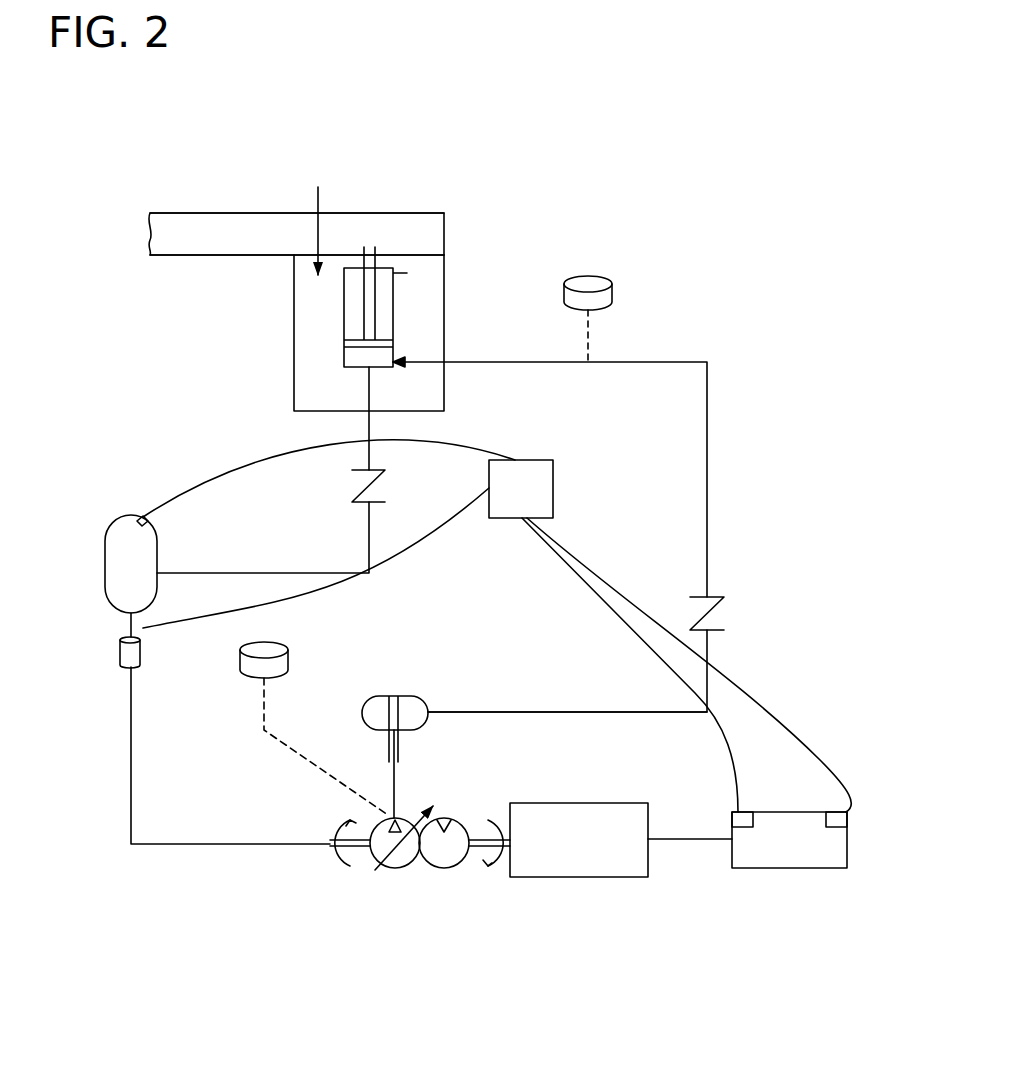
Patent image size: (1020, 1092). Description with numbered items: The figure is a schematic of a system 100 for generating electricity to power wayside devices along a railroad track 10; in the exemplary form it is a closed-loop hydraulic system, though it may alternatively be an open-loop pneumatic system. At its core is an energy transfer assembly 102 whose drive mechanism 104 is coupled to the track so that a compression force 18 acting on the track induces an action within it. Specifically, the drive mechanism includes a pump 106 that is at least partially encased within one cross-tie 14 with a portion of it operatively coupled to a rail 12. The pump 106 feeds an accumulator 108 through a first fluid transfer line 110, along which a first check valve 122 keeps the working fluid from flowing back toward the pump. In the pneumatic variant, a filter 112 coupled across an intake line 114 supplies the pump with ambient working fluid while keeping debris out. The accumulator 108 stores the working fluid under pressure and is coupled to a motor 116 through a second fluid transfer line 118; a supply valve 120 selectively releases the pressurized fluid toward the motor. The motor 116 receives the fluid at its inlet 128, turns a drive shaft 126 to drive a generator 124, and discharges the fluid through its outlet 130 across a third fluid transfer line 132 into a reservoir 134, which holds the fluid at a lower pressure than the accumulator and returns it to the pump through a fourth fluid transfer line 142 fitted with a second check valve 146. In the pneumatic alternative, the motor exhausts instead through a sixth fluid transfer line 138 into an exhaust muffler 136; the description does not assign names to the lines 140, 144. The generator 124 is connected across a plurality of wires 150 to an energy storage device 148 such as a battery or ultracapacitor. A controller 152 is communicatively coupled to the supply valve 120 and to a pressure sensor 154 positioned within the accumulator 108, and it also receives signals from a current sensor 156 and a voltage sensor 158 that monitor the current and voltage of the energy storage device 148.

The system 100 is at (692, 117).
The railroad track 10 is at (427, 165).
The rail 12 is at (257, 212).
The cross-tie 14 is at (294, 325).
The compression force 18 is at (318, 190).
The energy transfer assembly 102 is at (193, 450).
The drive mechanism 104 is at (402, 315).
The pump 106 is at (343, 322).
The accumulator 108 is at (105, 541).
The first fluid transfer line 110 is at (278, 573).
The filter 112 is at (612, 284).
The intake line 114 is at (590, 330).
The motor 116 is at (421, 870).
The second fluid transfer line 118 is at (157, 843).
The supply valve 120 is at (120, 650).
The first check valve 122 is at (393, 477).
The generator 124 is at (600, 877).
The drive shaft 126 is at (505, 830).
The inlet 128 is at (322, 852).
The outlet 130 is at (404, 806).
The third fluid transfer line 132 is at (400, 775).
The reservoir 134 is at (408, 696).
The exhaust muffler 136 is at (273, 642).
The sixth fluid transfer line 138 is at (290, 748).
The control signal 140 is at (382, 772).
The fourth fluid transfer line 142 is at (708, 440).
The pilot line 144 is at (443, 703).
The second check valve 146 is at (728, 612).
The energy storage device 148 is at (752, 812).
The wires 150 is at (695, 838).
The controller 152 is at (541, 503).
The pressure sensor 154 is at (137, 517).
The current sensor 156 is at (745, 830).
The voltage sensor 158 is at (835, 830).